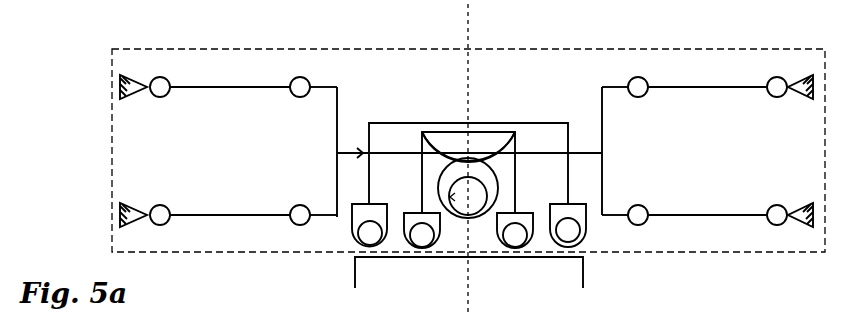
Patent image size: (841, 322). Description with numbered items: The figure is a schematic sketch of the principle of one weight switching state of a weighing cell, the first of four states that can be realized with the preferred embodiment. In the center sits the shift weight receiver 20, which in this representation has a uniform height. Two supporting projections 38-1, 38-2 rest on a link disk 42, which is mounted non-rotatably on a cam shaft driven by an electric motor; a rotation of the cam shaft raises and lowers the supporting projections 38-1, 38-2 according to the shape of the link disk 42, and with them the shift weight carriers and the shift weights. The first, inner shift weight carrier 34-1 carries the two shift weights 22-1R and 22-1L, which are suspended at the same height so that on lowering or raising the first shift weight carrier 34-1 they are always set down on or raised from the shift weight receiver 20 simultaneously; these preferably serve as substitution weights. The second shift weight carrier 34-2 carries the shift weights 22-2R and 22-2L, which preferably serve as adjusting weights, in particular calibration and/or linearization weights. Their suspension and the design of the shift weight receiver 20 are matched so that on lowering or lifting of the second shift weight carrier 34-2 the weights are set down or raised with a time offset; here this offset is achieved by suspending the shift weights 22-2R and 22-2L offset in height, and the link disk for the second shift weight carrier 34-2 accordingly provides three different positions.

The shift weight receiver 20 is at (447, 253).
The link disk 42 is at (470, 195).
The first shift weight carrier 34-1 is at (232, 143).
The second shift weight carrier 34-2 is at (703, 140).
The supporting projection 38-1 is at (428, 137).
The supporting projection 38-2 is at (508, 137).
The shift weight 22-1L is at (418, 236).
The shift weight 22-2L is at (363, 233).
The shift weight 22-1R is at (519, 236).
The shift weight 22-2R is at (583, 231).